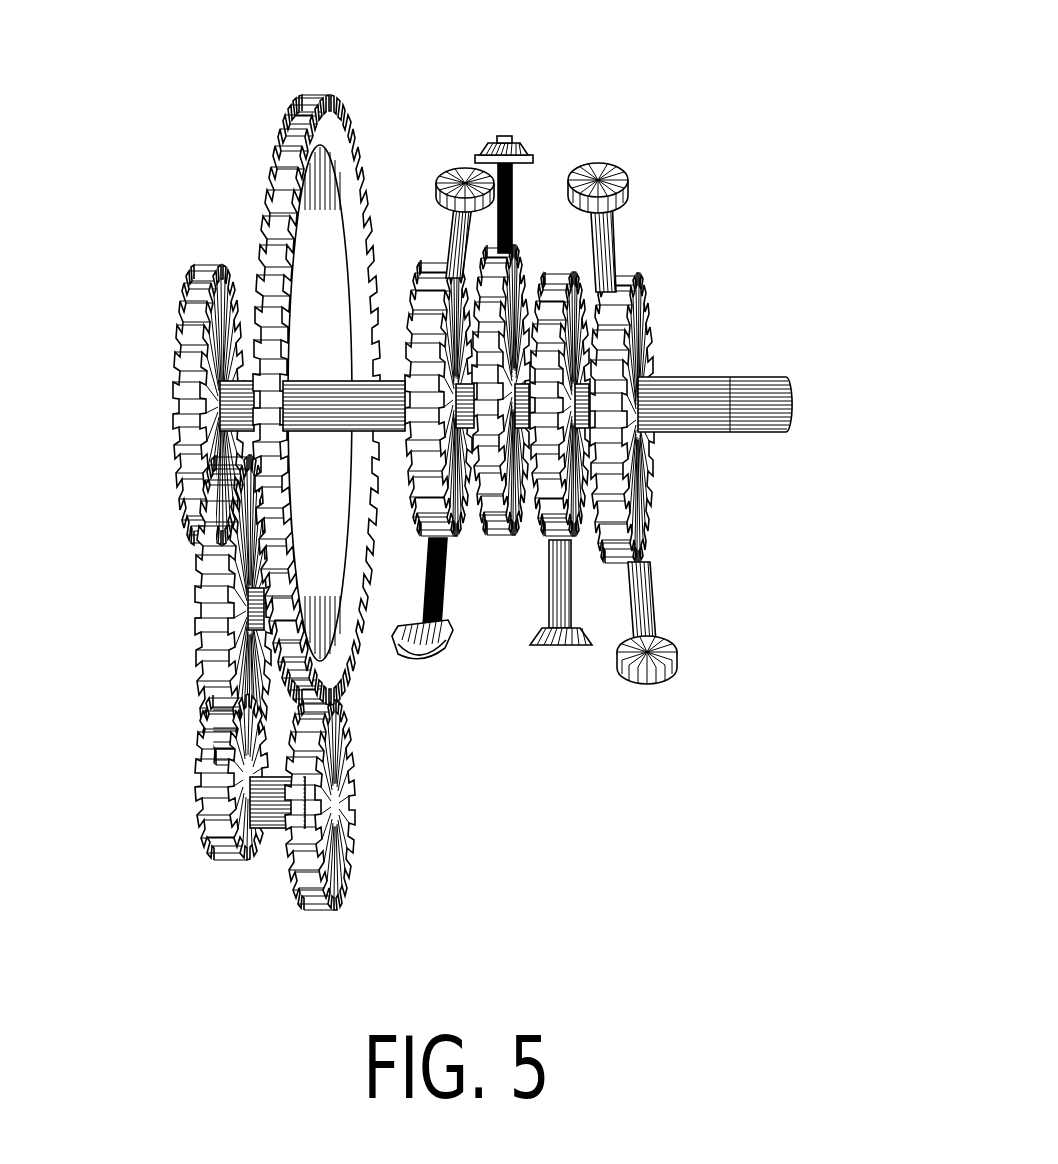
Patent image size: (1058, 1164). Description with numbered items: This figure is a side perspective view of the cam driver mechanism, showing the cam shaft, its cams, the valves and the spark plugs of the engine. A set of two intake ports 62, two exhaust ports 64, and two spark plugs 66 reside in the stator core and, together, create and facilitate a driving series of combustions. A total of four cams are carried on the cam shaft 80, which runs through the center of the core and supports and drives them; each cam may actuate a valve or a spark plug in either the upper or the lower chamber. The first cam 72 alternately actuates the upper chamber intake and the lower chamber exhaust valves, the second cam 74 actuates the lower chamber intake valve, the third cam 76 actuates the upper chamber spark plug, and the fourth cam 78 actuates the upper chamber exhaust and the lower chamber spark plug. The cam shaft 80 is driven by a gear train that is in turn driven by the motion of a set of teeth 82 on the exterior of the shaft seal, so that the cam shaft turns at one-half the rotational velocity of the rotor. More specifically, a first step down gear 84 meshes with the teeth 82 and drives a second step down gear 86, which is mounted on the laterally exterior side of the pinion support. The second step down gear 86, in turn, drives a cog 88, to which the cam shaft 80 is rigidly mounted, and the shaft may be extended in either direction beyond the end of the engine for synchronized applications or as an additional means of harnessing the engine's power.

The intake ports 62 is at (628, 182).
The exhaust ports 64 is at (443, 172).
The spark plugs 66 is at (520, 148).
The first cam 72 is at (645, 310).
The second cam 74 is at (540, 475).
The third cam 76 is at (498, 515).
The fourth cam 78 is at (425, 358).
The cam shaft 80 is at (742, 410).
The teeth 82 is at (285, 173).
The first step down gear 84 is at (230, 803).
The second step down gear 86 is at (215, 607).
The cog 88 is at (195, 345).